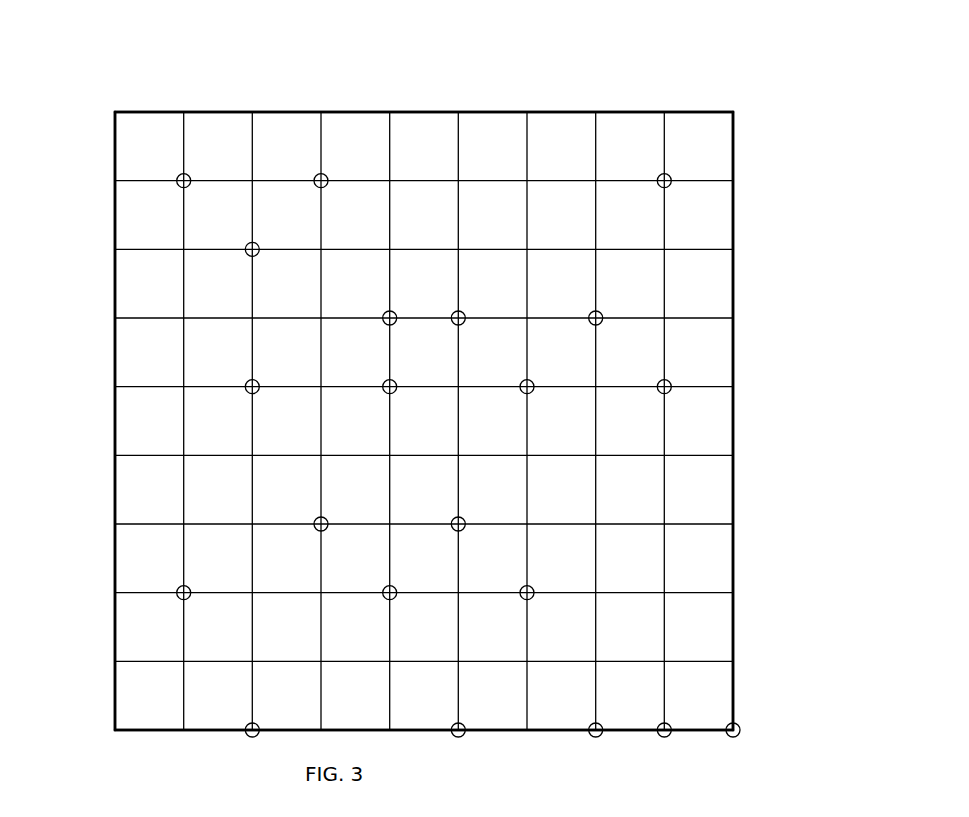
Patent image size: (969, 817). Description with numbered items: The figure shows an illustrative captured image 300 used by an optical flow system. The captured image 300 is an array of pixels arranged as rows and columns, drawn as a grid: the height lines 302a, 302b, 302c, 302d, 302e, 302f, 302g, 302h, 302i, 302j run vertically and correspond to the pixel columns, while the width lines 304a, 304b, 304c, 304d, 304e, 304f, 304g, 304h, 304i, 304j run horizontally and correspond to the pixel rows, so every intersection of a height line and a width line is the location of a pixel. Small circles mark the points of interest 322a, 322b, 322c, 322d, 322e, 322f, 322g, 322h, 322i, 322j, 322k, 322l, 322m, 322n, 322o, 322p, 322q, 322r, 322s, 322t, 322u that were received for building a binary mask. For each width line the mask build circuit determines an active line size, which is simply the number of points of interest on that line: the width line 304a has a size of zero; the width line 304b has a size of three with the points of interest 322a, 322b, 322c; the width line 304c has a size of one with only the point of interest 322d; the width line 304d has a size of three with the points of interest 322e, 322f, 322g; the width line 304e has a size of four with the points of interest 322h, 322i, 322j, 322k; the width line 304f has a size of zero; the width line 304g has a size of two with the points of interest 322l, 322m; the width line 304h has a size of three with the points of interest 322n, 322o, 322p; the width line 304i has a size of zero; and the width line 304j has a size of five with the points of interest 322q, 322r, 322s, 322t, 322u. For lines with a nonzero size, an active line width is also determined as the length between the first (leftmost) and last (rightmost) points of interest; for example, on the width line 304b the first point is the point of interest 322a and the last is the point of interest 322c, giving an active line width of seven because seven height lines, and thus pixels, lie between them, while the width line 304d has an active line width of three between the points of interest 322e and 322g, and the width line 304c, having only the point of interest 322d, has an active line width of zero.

The captured image 300 is at (566, 58).
The height line 302a is at (115, 130).
The height line 302b is at (184, 124).
The height line 302c is at (252, 124).
The height line 302d is at (321, 124).
The height line 302e is at (390, 124).
The height line 302f is at (458, 124).
The height line 302g is at (527, 124).
The height line 302h is at (596, 124).
The height line 302i is at (664, 124).
The height line 302j is at (737, 118).
The width line 304a is at (135, 112).
The width line 304b is at (130, 181).
The width line 304c is at (130, 249).
The width line 304d is at (130, 318).
The width line 304e is at (130, 387).
The width line 304f is at (130, 455).
The width line 304g is at (130, 524).
The width line 304h is at (130, 593).
The width line 304i is at (130, 661).
The width line 304j is at (134, 733).
The point of interest 322a is at (178, 177).
The point of interest 322b is at (315, 177).
The point of interest 322c is at (670, 177).
The point of interest 322d is at (247, 245).
The point of interest 322e is at (384, 314).
The point of interest 322f is at (464, 314).
The point of interest 322g is at (601, 314).
The point of interest 322h is at (247, 382).
The point of interest 322i is at (384, 382).
The point of interest 322j is at (533, 382).
The point of interest 322k is at (670, 382).
The point of interest 322l is at (316, 530).
The point of interest 322m is at (463, 530).
The point of interest 322n is at (178, 599).
The point of interest 322o is at (384, 599).
The point of interest 322p is at (533, 599).
The point of interest 322q is at (247, 736).
The point of interest 322r is at (463, 736).
The point of interest 322s is at (601, 736).
The point of interest 322t is at (670, 736).
The point of interest 322u is at (739, 736).